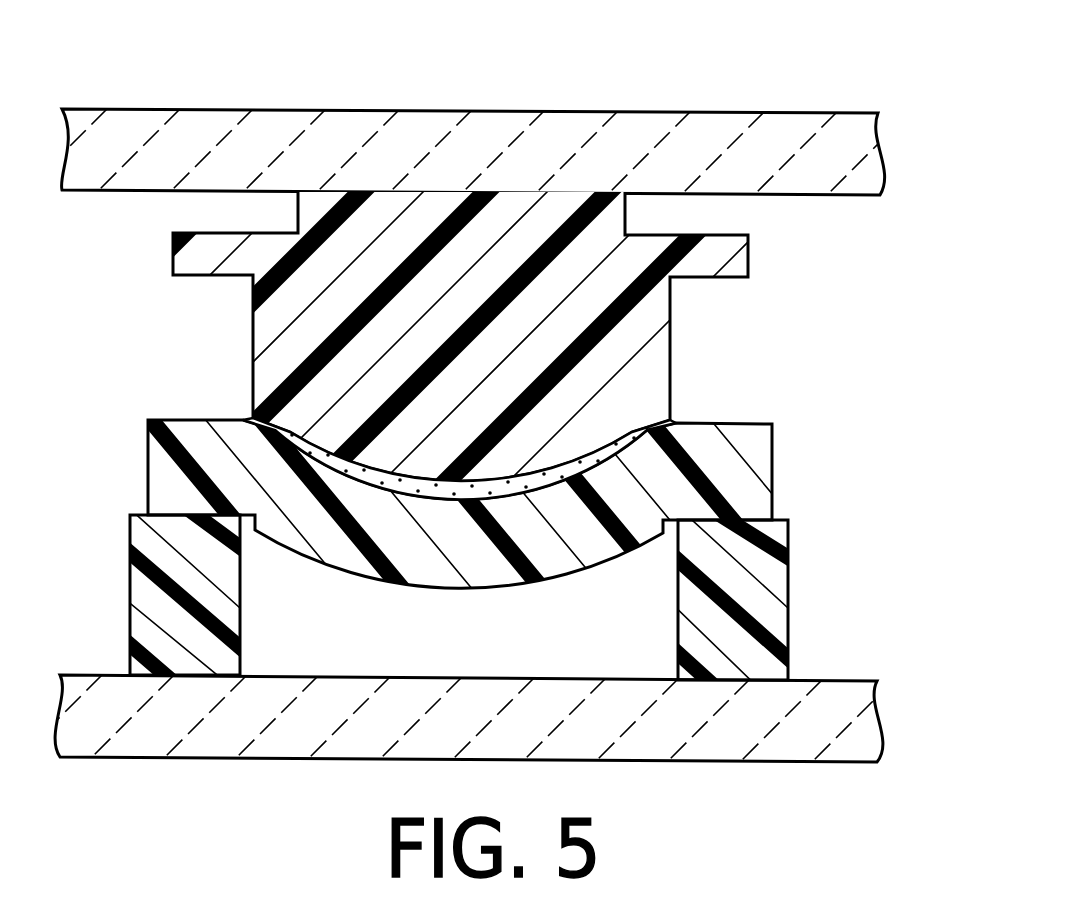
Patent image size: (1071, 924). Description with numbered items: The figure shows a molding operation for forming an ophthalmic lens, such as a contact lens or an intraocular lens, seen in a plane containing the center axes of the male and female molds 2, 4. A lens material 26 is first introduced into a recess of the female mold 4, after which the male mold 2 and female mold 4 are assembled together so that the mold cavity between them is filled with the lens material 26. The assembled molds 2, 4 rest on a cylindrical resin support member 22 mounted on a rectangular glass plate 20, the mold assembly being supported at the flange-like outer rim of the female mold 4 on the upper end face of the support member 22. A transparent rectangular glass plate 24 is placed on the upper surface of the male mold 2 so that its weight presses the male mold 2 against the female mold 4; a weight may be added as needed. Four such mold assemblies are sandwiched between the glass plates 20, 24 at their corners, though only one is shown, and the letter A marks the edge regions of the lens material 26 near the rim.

The male mold 2 is at (700, 305).
The female mold 4 is at (790, 462).
The glass plate 20 is at (840, 697).
The cylindrical resin support member 22 is at (777, 588).
The glass plate 24 is at (705, 130).
The lens material 26 is at (392, 487).
The edge region of sliding layer A is at (273, 424).